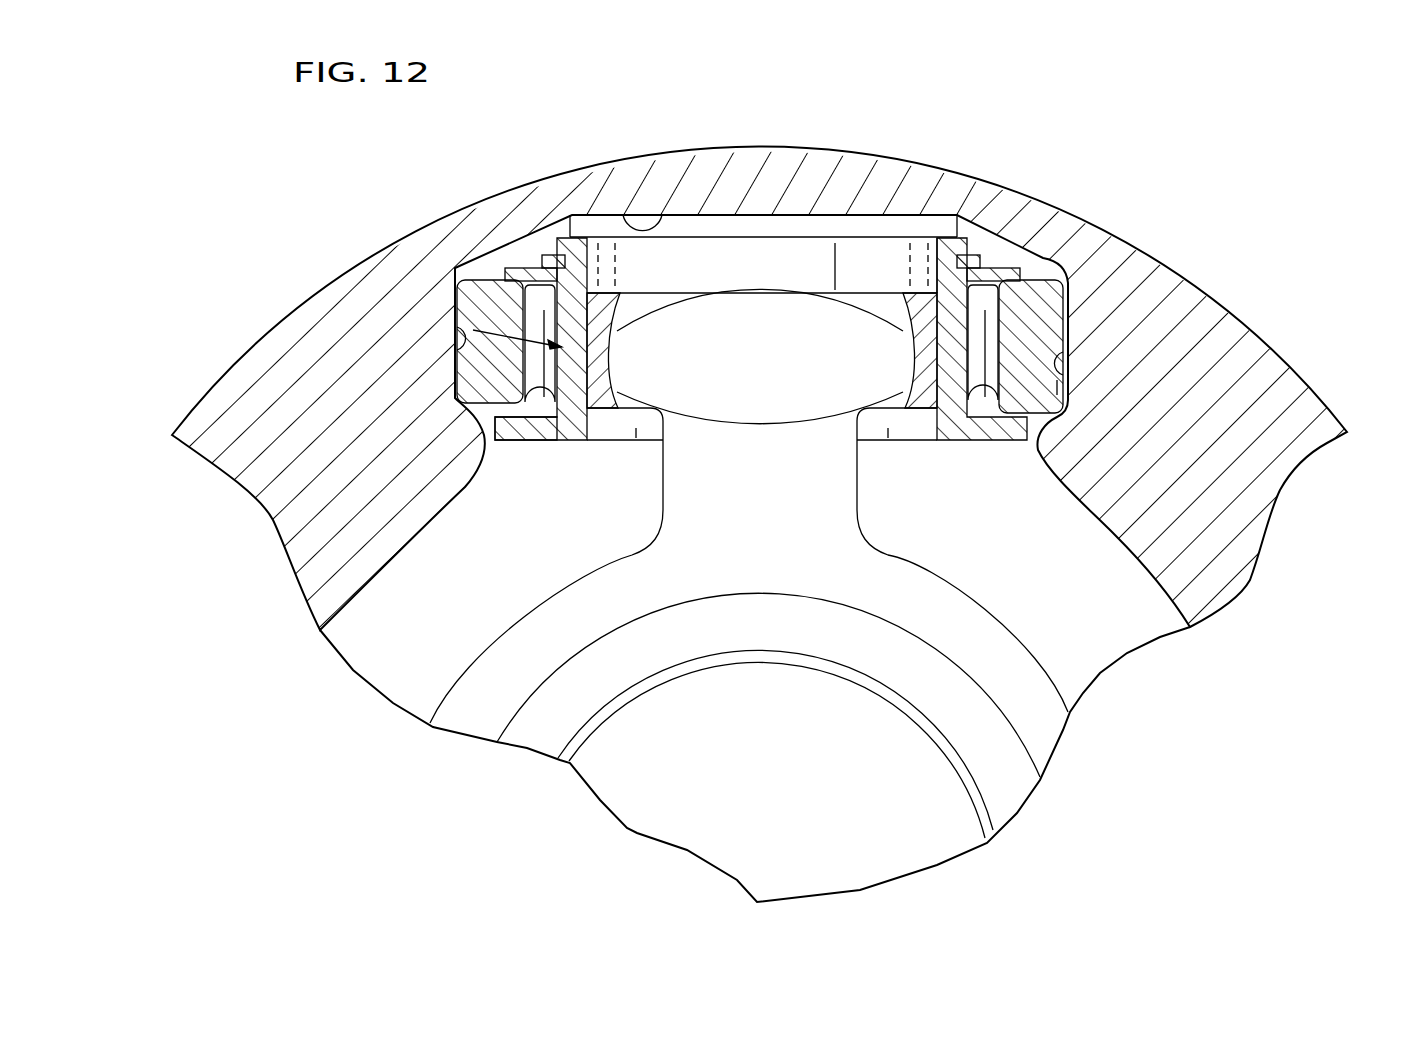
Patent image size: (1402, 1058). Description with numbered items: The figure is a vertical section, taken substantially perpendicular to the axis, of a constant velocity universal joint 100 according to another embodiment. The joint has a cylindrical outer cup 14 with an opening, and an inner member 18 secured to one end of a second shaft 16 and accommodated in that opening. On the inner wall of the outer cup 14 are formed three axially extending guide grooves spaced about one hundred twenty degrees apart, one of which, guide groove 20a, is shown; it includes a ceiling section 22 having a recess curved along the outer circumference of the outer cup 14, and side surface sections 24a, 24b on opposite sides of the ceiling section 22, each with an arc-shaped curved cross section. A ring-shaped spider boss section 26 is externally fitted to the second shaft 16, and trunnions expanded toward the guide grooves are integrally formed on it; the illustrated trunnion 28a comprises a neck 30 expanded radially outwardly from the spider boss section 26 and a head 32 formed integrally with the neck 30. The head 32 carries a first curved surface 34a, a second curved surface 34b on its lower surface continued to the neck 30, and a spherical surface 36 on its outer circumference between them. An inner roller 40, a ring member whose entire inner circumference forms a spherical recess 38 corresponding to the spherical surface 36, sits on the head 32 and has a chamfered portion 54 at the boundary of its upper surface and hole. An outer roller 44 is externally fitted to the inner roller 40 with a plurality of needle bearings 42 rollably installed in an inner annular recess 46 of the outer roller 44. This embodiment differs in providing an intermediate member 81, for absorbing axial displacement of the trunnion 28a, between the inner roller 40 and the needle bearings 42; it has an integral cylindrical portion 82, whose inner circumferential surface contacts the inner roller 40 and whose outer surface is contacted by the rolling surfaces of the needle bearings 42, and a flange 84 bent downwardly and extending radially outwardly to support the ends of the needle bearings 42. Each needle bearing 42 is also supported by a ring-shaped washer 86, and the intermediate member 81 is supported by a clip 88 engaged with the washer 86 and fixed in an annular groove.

The outer cup 14 is at (1060, 214).
The second shaft 16 is at (870, 830).
The inner member 18 is at (755, 753).
The guide groove 20a is at (733, 233).
The ceiling section 22 is at (662, 213).
The side surface section 24a is at (455, 367).
The side surface section 24b is at (1068, 375).
The spider boss section 26 is at (1005, 650).
The trunnion 28a is at (770, 320).
The neck 30 is at (749, 565).
The head 32 is at (588, 242).
The first curved surface 34a is at (657, 343).
The second curved surface 34b is at (742, 423).
The spherical surface 36 is at (760, 392).
The spherical recess 38 is at (1093, 370).
The inner roller 40 is at (968, 240).
The needle bearings 42 is at (995, 320).
The outer roller 44 is at (1027, 357).
The inner annular recess 46 is at (478, 410).
The chamfered portion 54 is at (615, 425).
The intermediate member 81 is at (480, 280).
The cylindrical portion 82 is at (565, 256).
The flange 84 is at (538, 432).
The washer 86 is at (1022, 271).
The clip 88 is at (978, 256).
The constant velocity universal joint 100 is at (1138, 127).